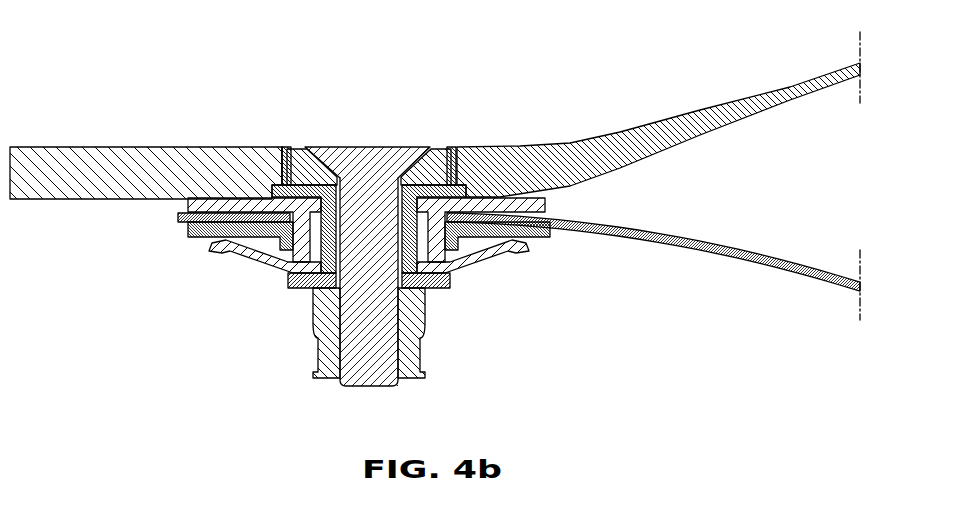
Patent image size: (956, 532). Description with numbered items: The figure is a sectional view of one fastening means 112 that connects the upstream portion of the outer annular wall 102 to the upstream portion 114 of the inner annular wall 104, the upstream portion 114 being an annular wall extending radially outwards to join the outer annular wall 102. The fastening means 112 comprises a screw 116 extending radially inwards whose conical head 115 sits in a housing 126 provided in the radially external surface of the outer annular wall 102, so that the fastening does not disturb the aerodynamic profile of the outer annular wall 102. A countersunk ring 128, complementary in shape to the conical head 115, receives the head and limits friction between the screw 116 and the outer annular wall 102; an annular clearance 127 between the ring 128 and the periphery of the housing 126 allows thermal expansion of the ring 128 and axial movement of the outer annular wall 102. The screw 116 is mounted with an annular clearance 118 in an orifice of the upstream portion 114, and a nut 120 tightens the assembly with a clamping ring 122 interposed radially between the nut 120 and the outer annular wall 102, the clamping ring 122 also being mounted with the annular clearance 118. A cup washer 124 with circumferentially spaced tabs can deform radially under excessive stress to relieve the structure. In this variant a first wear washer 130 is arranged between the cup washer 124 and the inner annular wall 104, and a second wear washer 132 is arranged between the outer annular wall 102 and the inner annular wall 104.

The outer annular wall 102 is at (753, 108).
The inner annular wall 104 is at (652, 282).
The fastening means 112 is at (312, 211).
The upstream portion of the inner annular wall 114 is at (805, 280).
The conical head 115 is at (381, 158).
The screw 116 is at (363, 377).
The annular clearance 118 is at (422, 234).
The nut 120 is at (323, 320).
The clamping ring 122 is at (300, 283).
The cup washer 124 is at (257, 255).
The housing 126 is at (461, 134).
The annular clearance 127 is at (282, 147).
The countersunk ring 128 is at (297, 147).
The first wear washer 130 is at (197, 233).
The second wear washer 132 is at (207, 205).